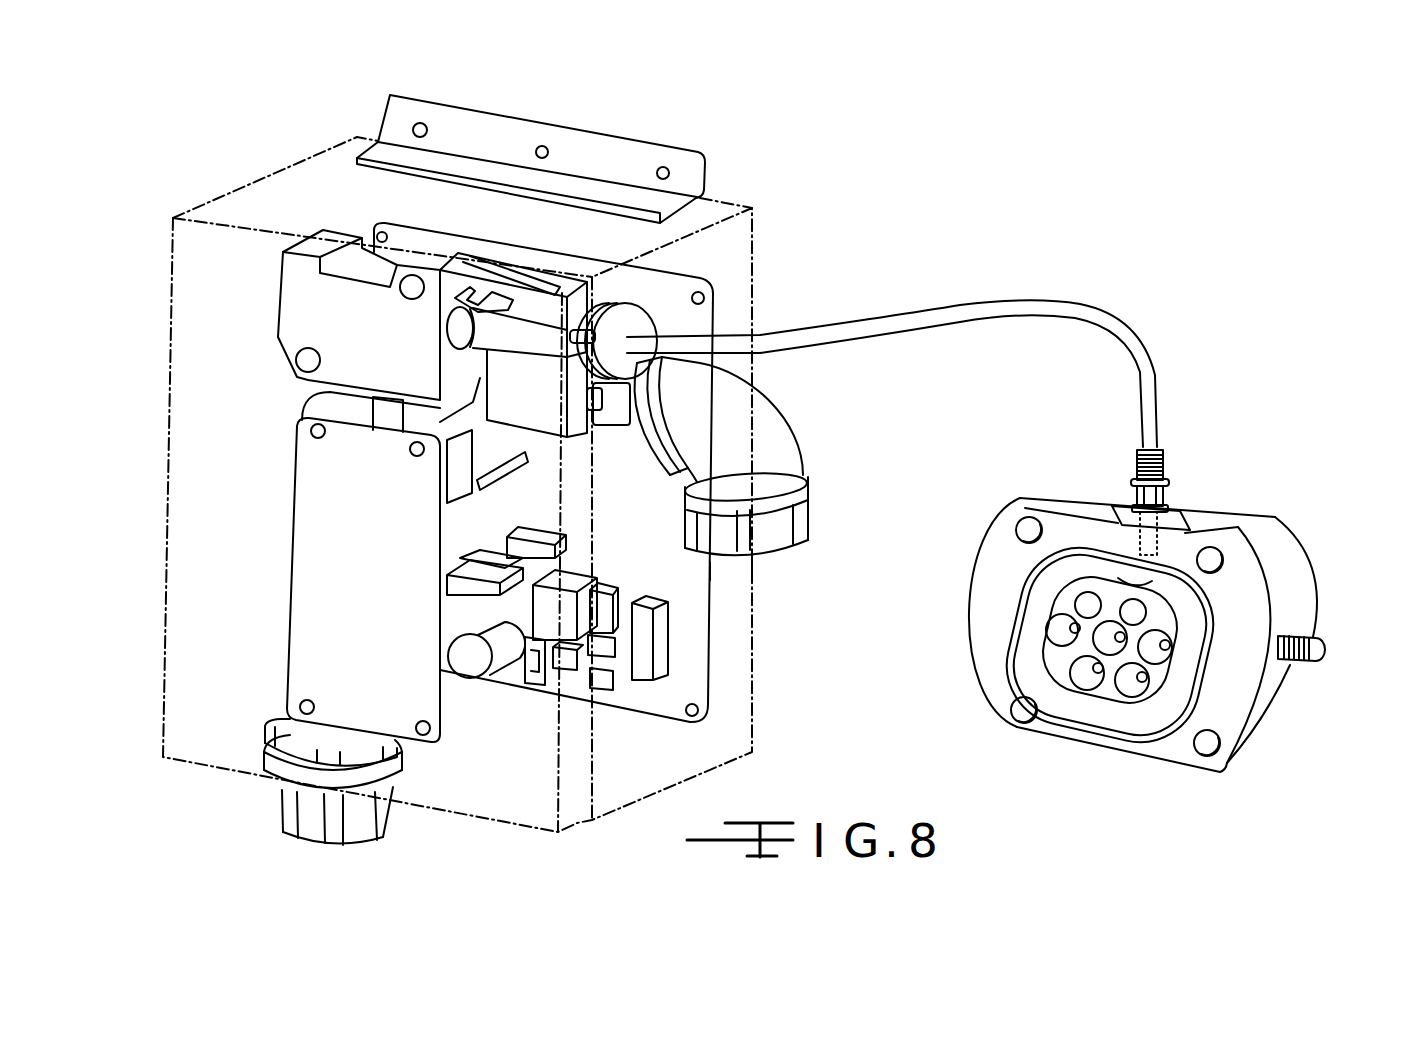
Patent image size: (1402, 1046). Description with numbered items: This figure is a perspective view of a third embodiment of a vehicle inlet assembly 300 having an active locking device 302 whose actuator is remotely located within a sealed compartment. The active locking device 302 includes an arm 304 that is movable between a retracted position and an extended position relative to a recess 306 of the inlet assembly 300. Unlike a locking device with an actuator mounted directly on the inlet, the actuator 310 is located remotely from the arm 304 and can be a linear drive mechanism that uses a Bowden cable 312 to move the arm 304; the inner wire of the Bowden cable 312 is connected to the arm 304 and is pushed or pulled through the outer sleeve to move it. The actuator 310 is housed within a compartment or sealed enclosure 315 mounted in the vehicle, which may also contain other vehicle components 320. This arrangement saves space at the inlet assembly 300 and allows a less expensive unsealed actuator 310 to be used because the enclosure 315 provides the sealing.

The inlet assembly 300 is at (1322, 627).
The active locking device 302 is at (1178, 467).
The arm 304 is at (1160, 543).
The recess 306 is at (1160, 583).
The actuator 310 is at (546, 296).
The Bowden cable 312 is at (940, 308).
The sealed enclosure 315 is at (261, 178).
The vehicle components 320 is at (290, 540).